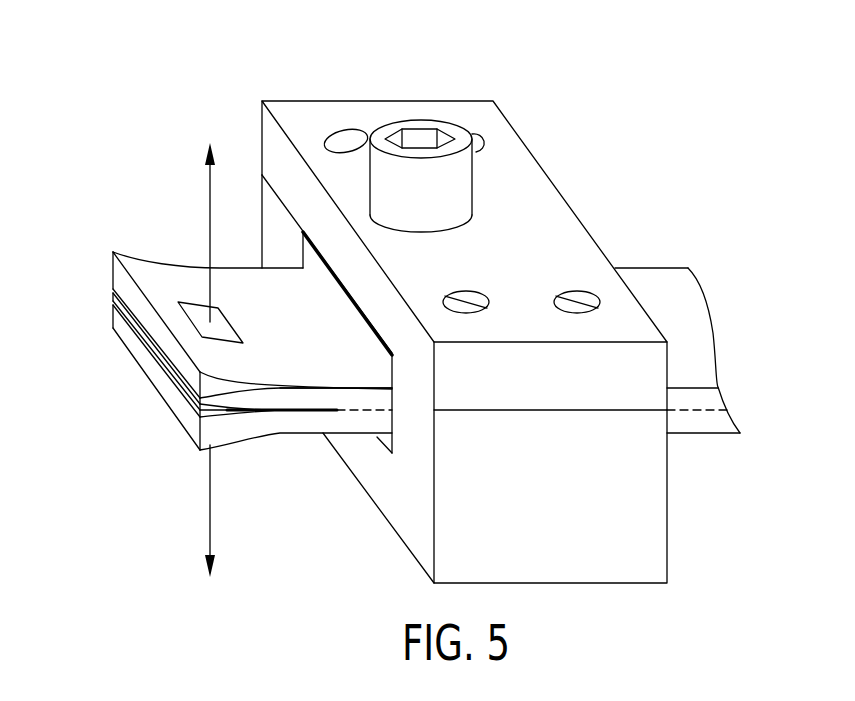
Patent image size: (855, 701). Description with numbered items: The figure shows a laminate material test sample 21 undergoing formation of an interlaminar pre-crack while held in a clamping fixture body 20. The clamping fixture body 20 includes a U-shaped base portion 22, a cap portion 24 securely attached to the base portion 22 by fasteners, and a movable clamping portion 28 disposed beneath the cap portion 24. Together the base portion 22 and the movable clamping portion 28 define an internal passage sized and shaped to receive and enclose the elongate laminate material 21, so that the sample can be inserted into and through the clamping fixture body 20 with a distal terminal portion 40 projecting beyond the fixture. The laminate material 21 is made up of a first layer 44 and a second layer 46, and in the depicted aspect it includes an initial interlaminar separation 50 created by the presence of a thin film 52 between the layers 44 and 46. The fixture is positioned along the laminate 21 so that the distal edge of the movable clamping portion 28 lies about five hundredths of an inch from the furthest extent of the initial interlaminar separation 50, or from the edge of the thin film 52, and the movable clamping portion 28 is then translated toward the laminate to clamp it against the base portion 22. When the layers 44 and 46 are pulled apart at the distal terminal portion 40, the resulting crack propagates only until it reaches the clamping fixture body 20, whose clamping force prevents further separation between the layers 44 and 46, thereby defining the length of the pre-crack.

The clamping fixture body 20 is at (567, 88).
The laminate material test sample 21 is at (665, 278).
The U-shaped base portion 22 is at (667, 498).
The cap portion 24 is at (556, 187).
The movable clamping portion 28 is at (348, 292).
The distal terminal portion 40 is at (144, 183).
The first layer 44 is at (122, 253).
The second layer 46 is at (165, 402).
The initial interlaminar separation 50 is at (293, 412).
The thin film 52 is at (112, 297).